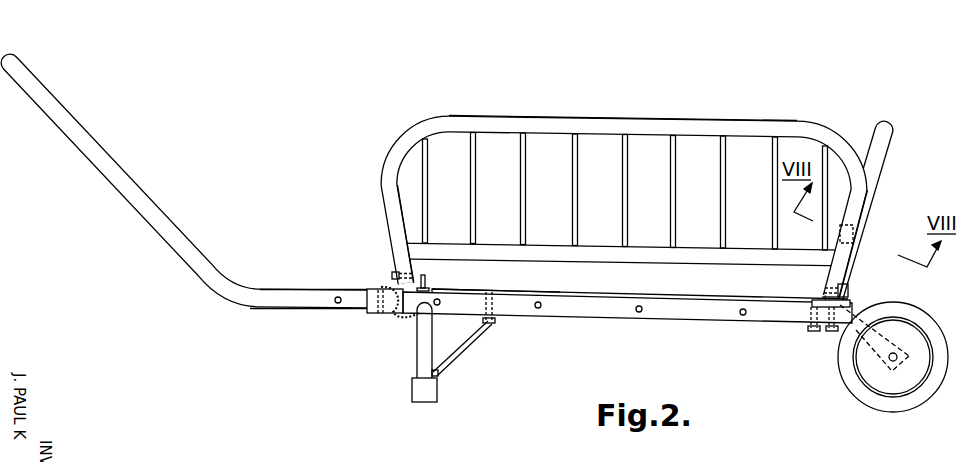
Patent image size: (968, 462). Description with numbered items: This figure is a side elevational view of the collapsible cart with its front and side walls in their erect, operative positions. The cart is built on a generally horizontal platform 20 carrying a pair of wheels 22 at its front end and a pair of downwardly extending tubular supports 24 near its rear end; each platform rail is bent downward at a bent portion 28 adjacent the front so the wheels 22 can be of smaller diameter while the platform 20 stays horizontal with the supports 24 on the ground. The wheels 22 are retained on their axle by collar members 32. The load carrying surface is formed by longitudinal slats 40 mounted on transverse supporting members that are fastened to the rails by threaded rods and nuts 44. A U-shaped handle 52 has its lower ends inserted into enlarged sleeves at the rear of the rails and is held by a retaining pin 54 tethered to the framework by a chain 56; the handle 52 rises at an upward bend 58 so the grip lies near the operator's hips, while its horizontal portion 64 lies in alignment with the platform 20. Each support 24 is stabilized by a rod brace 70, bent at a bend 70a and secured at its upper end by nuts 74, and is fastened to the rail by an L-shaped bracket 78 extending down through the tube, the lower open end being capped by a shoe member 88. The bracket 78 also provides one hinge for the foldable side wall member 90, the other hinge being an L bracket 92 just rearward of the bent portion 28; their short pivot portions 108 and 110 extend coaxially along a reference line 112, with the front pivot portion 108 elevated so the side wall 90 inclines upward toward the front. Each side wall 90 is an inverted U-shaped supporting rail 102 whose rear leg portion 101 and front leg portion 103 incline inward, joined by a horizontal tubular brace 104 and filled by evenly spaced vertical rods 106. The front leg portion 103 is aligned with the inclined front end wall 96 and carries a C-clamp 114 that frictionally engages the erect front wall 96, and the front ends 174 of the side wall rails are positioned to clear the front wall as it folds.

The platform 20 is at (598, 320).
The wheels 22 is at (858, 394).
The supports 24 is at (417, 341).
The bent portion 28 is at (858, 310).
The collar members 32 is at (881, 361).
The slats 40 is at (507, 292).
The nuts 44 is at (548, 308).
The handle 52 is at (103, 155).
The retaining pin 54 is at (343, 306).
The chain 56 is at (380, 311).
The upward bend of handle 58 is at (230, 281).
The horizontal portion 64 is at (287, 290).
The rod brace 70 is at (463, 350).
The bend of rod brace 70a is at (438, 375).
The nuts 74 is at (812, 332).
The L-shaped bracket 78 is at (429, 280).
The shoe member 88 is at (425, 403).
The side wall member 90 is at (536, 118).
The L bracket 92 is at (808, 288).
The front end wall 96 is at (876, 120).
The leg portion 101 is at (390, 247).
The supporting rail 102 is at (642, 122).
The front leg portion 103 is at (858, 217).
The horizontal tubular brace 104 is at (605, 258).
The vertical rods 106 is at (470, 150).
The pivot portion 108 is at (822, 283).
The pivot portion 110 is at (392, 275).
The reference line 112 is at (680, 281).
The C-clamp 114 is at (860, 233).
The front ends of side wall rails 174 is at (828, 330).